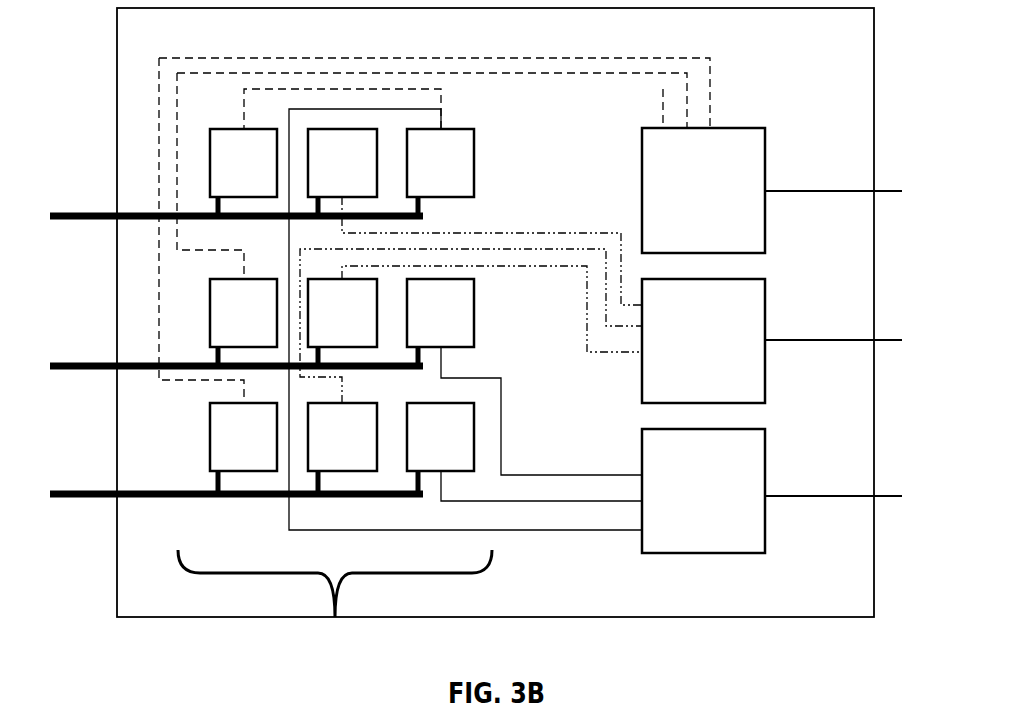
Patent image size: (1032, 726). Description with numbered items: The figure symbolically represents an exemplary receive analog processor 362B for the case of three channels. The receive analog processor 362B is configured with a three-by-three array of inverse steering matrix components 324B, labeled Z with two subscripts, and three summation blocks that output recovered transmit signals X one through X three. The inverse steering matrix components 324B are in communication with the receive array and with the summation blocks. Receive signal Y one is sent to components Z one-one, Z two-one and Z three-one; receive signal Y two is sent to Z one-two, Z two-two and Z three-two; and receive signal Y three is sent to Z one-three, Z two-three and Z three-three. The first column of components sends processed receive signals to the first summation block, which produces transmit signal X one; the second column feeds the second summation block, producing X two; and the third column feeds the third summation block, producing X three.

The receive analog processor 362B is at (167, 41).
The inverse steering matrix components 324B is at (335, 617).